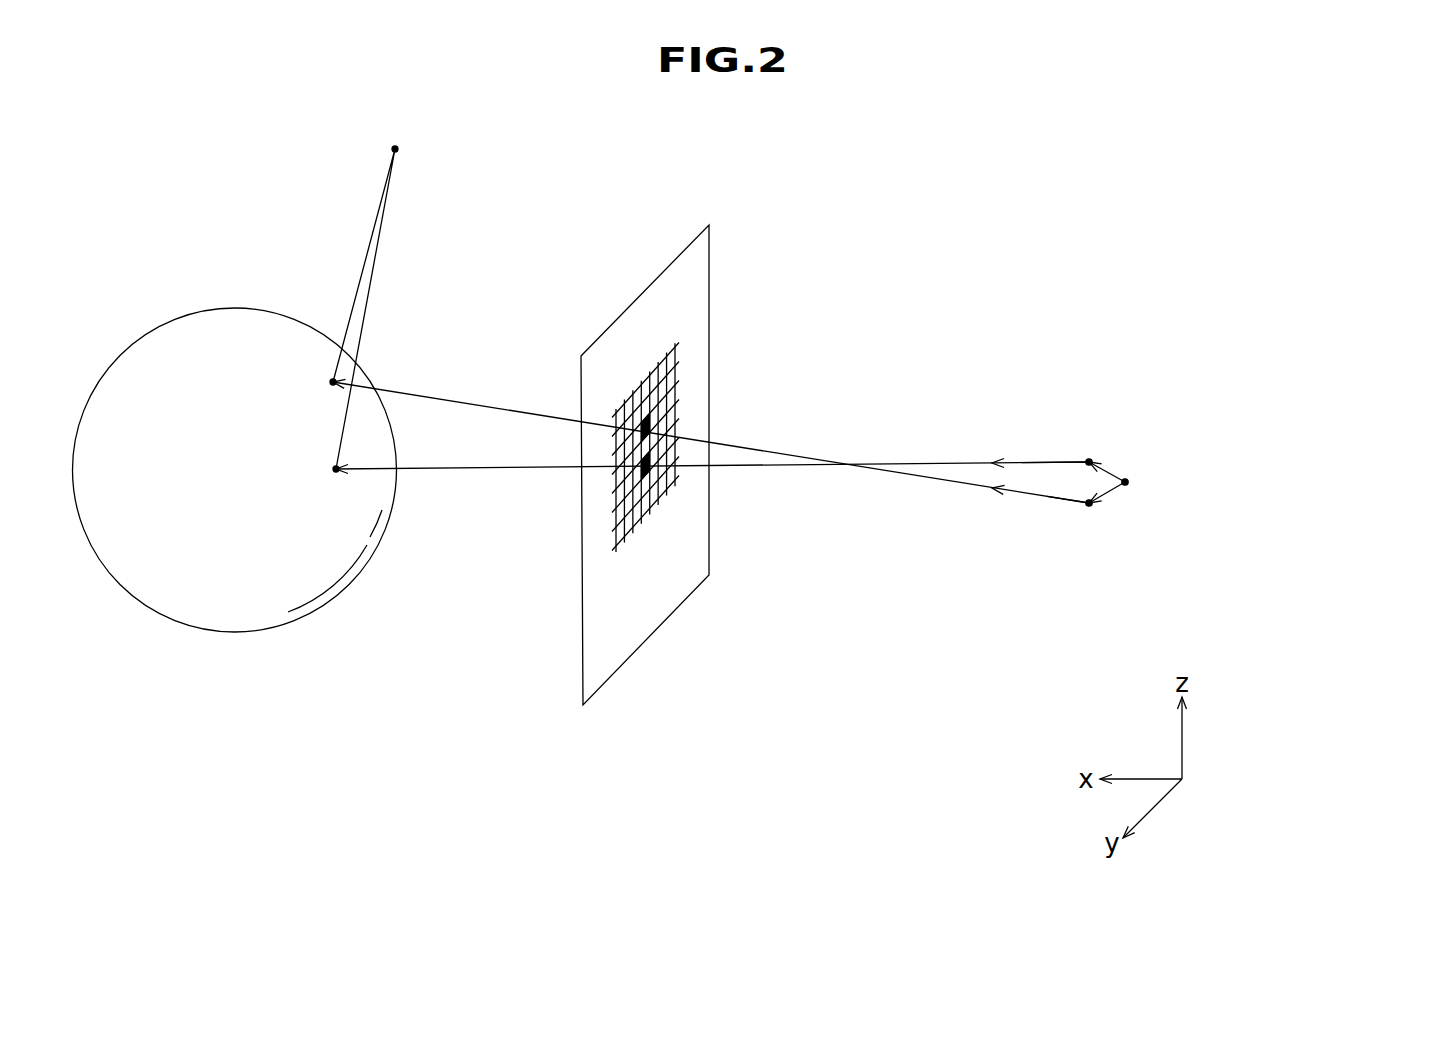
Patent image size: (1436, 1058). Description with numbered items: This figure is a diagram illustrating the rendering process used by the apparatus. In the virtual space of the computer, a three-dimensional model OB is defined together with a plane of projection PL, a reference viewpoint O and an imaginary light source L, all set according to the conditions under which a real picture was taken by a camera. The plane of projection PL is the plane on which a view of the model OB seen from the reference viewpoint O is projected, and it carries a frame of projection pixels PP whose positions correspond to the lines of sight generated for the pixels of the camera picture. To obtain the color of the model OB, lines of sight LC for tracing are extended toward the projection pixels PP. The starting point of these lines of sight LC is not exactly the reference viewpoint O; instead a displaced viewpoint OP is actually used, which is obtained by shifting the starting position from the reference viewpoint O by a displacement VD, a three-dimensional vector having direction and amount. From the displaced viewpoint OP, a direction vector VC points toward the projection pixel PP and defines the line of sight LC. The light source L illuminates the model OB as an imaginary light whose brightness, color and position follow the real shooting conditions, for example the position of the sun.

The light source L is at (482, 302).
The 3D model OB is at (227, 620).
The plane of projection PL is at (630, 643).
The projection pixel PP is at (673, 457).
The line of sight LC is at (937, 478).
The displaced viewpoint OP is at (1089, 462).
The displacement VD is at (1117, 476).
The reference viewpoint O is at (1125, 482).
The direction vector VC is at (1089, 463).